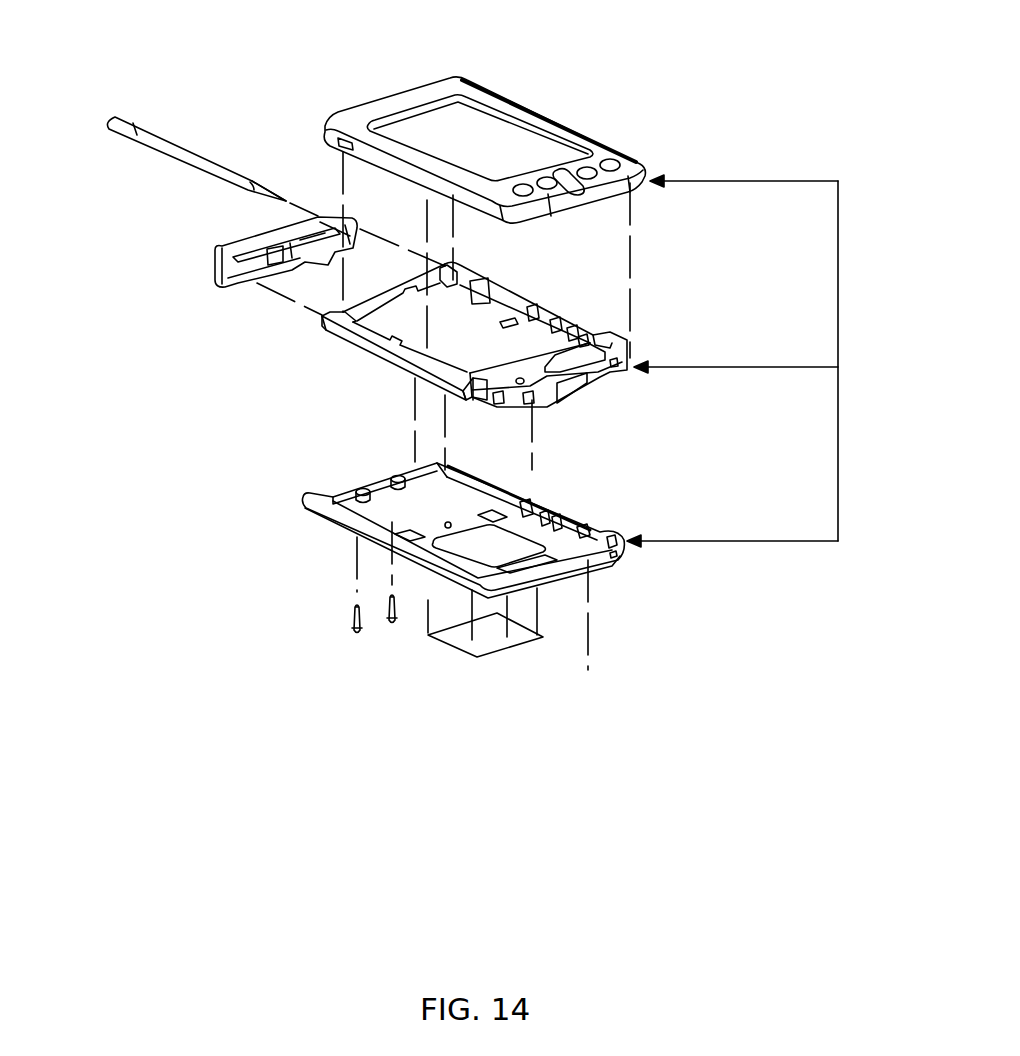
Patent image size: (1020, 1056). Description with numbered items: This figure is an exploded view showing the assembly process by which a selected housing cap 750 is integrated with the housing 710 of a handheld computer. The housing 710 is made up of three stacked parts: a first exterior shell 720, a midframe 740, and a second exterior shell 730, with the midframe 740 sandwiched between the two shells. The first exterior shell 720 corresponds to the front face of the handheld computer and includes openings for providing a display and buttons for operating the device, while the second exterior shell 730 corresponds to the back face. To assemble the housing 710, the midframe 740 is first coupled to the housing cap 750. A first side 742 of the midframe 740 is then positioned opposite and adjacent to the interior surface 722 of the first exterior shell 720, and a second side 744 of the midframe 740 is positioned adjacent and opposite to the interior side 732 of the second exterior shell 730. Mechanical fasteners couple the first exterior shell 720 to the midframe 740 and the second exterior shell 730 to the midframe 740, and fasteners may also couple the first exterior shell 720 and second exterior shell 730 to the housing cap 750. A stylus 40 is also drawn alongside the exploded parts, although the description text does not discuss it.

The stylus 40 is at (160, 135).
The housing 710 is at (840, 367).
The first exterior shell 720 is at (484, 127).
The interior surface of first exterior shell 722 is at (445, 104).
The second exterior shell 730 is at (459, 576).
The interior side of second exterior shell 732 is at (567, 547).
The midframe 740 is at (512, 362).
The first side of midframe 742 is at (514, 373).
The second side of midframe 744 is at (493, 407).
The housing cap 750 is at (247, 245).